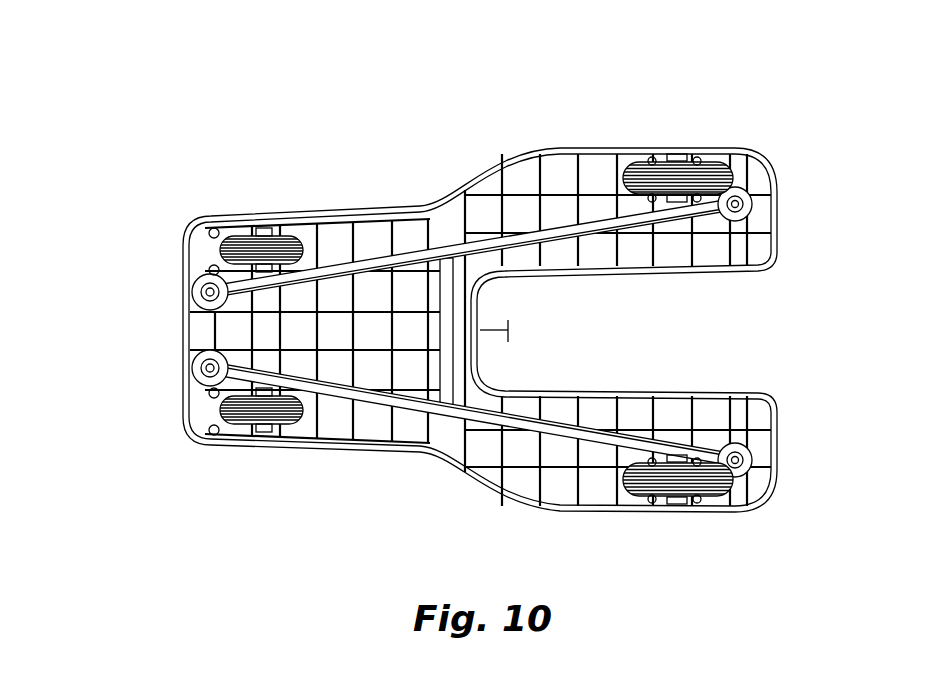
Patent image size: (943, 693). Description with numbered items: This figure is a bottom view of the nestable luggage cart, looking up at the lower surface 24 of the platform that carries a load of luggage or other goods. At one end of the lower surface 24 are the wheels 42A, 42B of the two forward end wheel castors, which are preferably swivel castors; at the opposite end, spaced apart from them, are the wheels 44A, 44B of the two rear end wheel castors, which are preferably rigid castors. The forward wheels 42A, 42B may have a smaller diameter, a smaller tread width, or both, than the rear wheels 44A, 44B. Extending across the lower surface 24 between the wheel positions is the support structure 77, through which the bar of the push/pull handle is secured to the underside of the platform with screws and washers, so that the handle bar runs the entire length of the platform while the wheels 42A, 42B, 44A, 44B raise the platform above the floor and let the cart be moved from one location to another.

The lower surface 24 is at (370, 223).
The support structure 77 is at (434, 252).
The wheel 42A is at (222, 254).
The wheel 42B is at (222, 411).
The wheel 44A is at (700, 177).
The wheel 44B is at (737, 497).